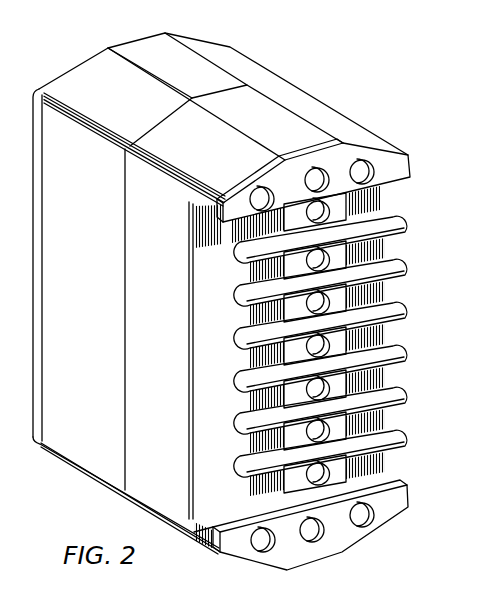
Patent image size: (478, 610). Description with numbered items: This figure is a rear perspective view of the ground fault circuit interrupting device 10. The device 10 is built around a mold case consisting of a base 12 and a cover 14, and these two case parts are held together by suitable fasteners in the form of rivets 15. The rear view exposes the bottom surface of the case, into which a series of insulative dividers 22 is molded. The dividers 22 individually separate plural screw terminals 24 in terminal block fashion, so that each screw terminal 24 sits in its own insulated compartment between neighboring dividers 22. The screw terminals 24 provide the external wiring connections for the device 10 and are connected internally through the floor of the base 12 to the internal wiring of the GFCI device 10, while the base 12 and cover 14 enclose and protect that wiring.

The ground fault circuit interrupting device 10 is at (78, 52).
The base 12 is at (257, 73).
The cover 14 is at (318, 114).
The rivets 15 is at (317, 176).
The insulative dividers 22 is at (323, 344).
The screw terminals 24 is at (258, 364).